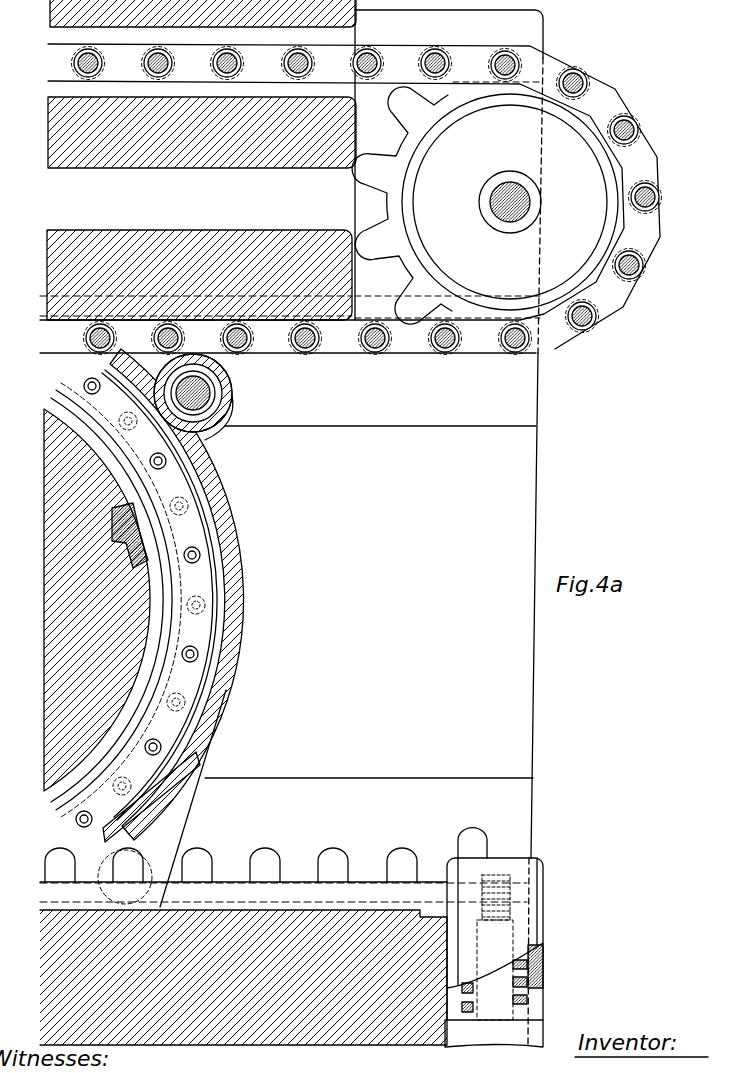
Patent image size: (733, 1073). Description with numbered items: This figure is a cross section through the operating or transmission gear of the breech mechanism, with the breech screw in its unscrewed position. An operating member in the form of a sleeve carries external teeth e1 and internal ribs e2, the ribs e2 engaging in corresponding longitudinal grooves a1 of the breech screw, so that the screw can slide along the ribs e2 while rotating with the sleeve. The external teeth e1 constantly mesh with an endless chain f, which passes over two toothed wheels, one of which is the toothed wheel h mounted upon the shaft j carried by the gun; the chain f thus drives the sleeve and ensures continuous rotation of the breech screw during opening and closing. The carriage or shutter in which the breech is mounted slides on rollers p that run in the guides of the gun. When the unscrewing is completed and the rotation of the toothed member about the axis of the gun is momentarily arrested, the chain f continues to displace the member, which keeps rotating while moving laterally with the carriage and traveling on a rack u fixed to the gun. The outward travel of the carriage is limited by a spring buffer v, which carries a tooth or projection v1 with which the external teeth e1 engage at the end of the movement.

The endless chain f is at (186, 70).
The rollers p is at (150, 307).
The toothed wheel h is at (380, 248).
The shaft j is at (517, 184).
The external teeth e1 is at (208, 573).
The internal ribs e2 is at (111, 600).
The longitudinal grooves a1 is at (112, 528).
The rack u is at (282, 858).
The spring buffer v is at (540, 920).
The tooth or projection v1 is at (475, 838).